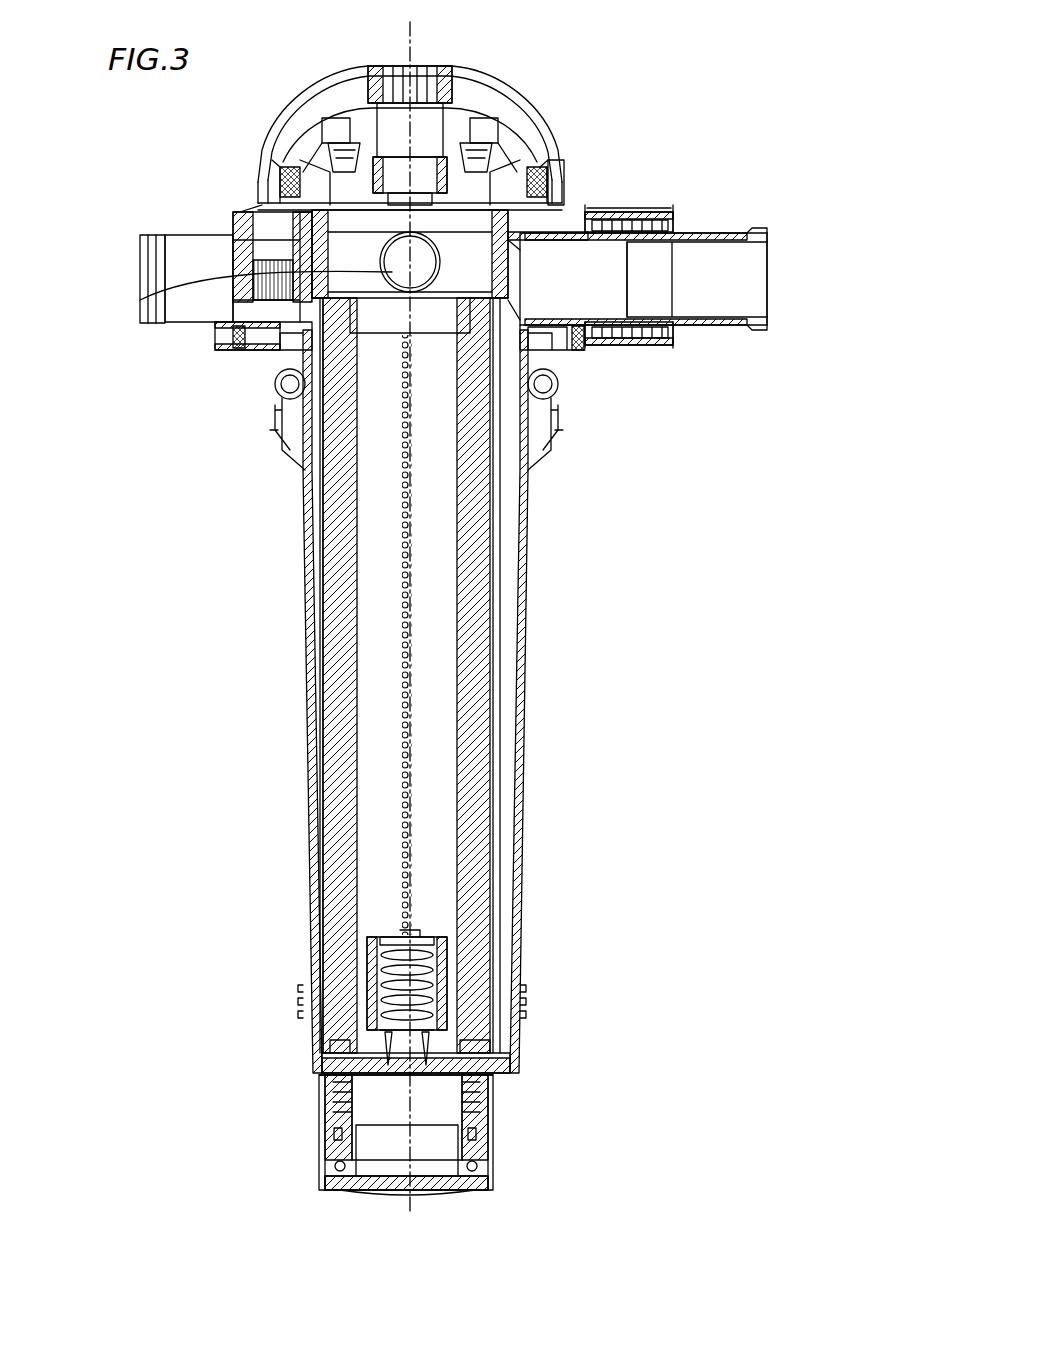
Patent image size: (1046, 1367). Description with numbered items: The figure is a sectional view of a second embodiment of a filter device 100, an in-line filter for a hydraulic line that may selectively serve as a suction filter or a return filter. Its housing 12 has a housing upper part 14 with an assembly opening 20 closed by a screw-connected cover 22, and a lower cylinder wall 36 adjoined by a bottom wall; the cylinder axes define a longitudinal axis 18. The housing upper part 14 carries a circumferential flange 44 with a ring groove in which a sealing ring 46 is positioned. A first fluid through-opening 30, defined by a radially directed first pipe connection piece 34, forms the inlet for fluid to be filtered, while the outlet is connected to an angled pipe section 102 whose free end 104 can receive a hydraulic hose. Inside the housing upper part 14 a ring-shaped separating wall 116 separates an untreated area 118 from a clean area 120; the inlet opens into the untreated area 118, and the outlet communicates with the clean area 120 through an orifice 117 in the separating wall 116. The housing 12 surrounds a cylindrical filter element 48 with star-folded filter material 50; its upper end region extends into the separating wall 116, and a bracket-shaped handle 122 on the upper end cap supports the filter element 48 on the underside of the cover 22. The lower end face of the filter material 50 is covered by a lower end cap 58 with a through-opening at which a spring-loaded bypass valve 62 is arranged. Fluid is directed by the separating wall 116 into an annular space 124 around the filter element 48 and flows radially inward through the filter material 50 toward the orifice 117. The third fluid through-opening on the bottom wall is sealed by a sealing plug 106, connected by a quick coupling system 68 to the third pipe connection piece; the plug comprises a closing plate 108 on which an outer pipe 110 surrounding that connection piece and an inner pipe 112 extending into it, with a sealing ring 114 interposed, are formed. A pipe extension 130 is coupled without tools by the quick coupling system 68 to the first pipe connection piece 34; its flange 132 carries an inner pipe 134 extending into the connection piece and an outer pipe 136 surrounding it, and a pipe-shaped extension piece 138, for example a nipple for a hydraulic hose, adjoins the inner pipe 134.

The filter device 100 is at (545, 85).
The housing 12 is at (295, 462).
The housing upper part 14 is at (255, 200).
The longitudinal axis 18 is at (408, 45).
The assembly opening 20 is at (550, 255).
The cover 22 is at (487, 90).
The first fluid through-opening 30 is at (578, 324).
The first pipe connection piece 34 is at (607, 237).
The lower cylinder wall 36 is at (318, 772).
The circumferential flange 44 is at (222, 337).
The sealing ring 46 is at (240, 352).
The filter element 48 is at (308, 658).
The filter material 50 is at (340, 598).
The lower end cap 58 is at (335, 1058).
The bypass valve 62 is at (440, 998).
The quick coupling system 68 is at (635, 205).
The angled pipe section 102 is at (183, 233).
The free end 104 is at (140, 258).
The sealing plug 106 is at (378, 1200).
The closing plate 108 is at (418, 1190).
The outer pipe 110 is at (487, 1116).
The inner pipe 112 is at (478, 1152).
The sealing ring 114 is at (494, 1166).
The separating wall 116 is at (540, 237).
The orifice 117 is at (140, 300).
The untreated area 118 is at (530, 335).
The clean area 120 is at (380, 237).
The handle 122 is at (560, 195).
The annular space 124 is at (505, 670).
The pipe extension 130 is at (712, 340).
The flange 132 is at (660, 342).
The inner pipe 134 is at (643, 313).
The outer pipe 136 is at (657, 212).
The extension piece 138 is at (757, 324).